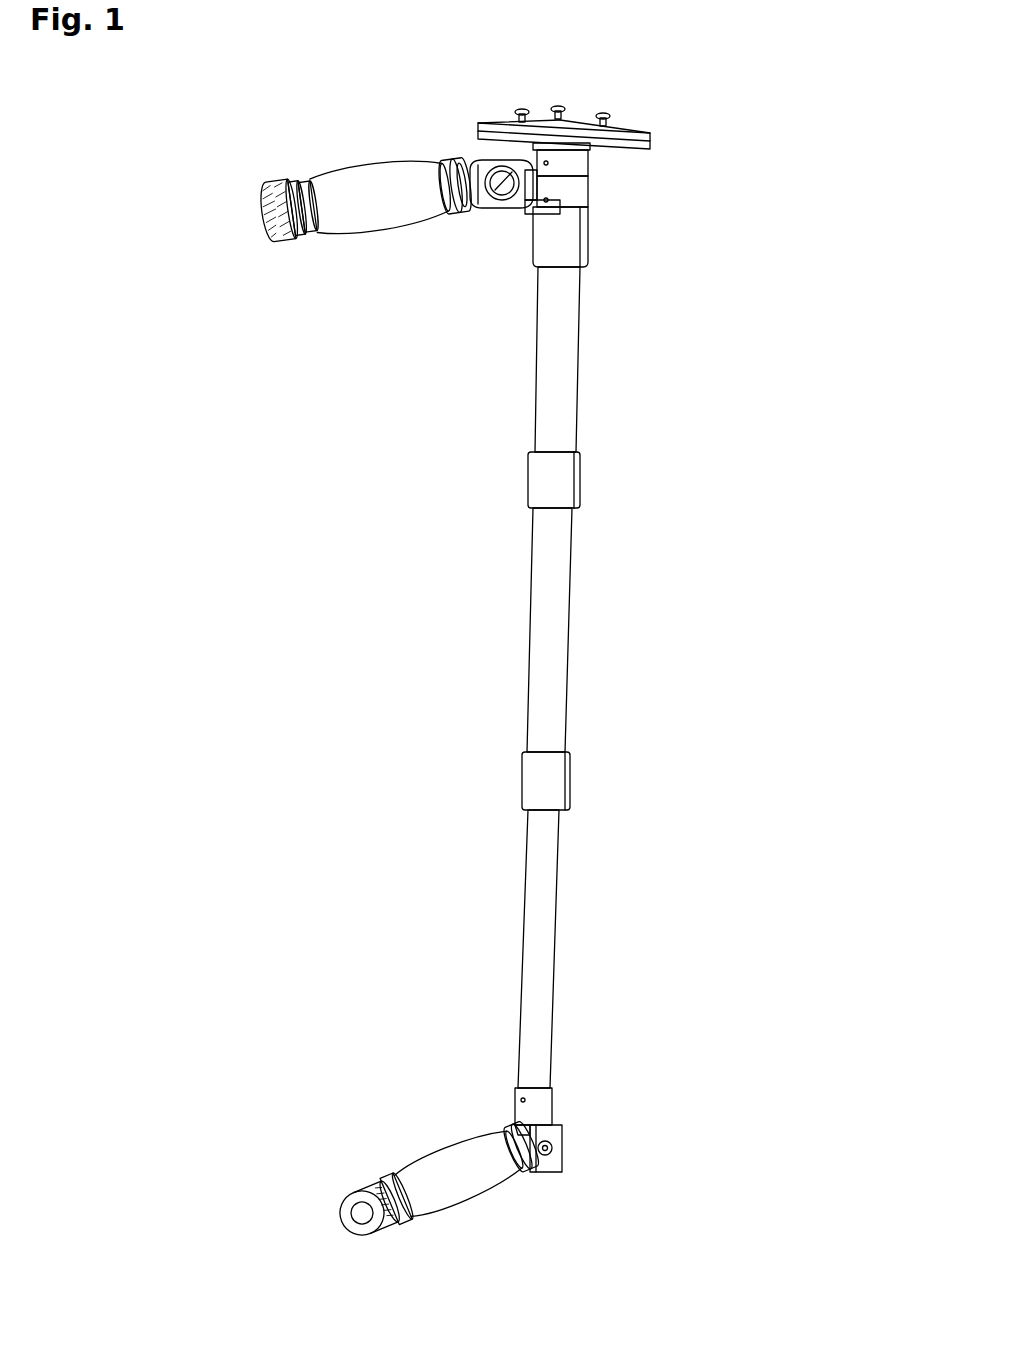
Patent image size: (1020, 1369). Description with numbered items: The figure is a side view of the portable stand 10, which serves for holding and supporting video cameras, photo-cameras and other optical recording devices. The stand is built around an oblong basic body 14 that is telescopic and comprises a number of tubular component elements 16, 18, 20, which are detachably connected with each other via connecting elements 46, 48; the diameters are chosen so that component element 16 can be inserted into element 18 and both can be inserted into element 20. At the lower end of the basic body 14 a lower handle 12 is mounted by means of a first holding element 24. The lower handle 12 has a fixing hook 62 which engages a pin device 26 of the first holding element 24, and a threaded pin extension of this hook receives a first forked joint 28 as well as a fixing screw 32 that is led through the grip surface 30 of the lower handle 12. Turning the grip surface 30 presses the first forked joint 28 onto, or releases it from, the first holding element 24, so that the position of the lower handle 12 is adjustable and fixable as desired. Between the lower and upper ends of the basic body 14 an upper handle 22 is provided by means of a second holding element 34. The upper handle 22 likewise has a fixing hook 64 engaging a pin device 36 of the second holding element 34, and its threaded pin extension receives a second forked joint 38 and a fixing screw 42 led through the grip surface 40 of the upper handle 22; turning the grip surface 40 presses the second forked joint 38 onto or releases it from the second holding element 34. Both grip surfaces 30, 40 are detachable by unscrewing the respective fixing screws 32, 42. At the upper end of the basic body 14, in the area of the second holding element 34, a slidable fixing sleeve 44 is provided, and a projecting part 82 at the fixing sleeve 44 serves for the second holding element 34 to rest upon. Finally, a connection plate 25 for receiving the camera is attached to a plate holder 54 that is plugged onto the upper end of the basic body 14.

The portable stand 10 is at (770, 317).
The lower handle 12 is at (376, 1106).
The oblong basic body 14 is at (455, 557).
The tubular component element 16 is at (540, 938).
The tubular component element 18 is at (560, 622).
The tubular component element 20 is at (568, 373).
The upper handle 22 is at (318, 294).
The first holding element 24 is at (558, 1130).
The connection plate 25 is at (630, 133).
The pin device 26 is at (554, 1152).
The first forked joint 28 is at (532, 1170).
The grip surface 30 is at (463, 1182).
The fixing screw 32 is at (377, 1233).
The second holding element 34 is at (550, 190).
The pin device 36 is at (492, 197).
The second forked joint 38 is at (470, 190).
The grip surface 40 is at (385, 192).
The fixing screw 42 is at (268, 200).
The fixing sleeve 44 is at (573, 252).
The connecting element 46 is at (570, 487).
The connecting element 48 is at (558, 787).
The plate holder 54 is at (573, 160).
The fixing hook 62 is at (515, 1123).
The fixing hook 64 is at (512, 192).
The projecting part 82 is at (538, 210).